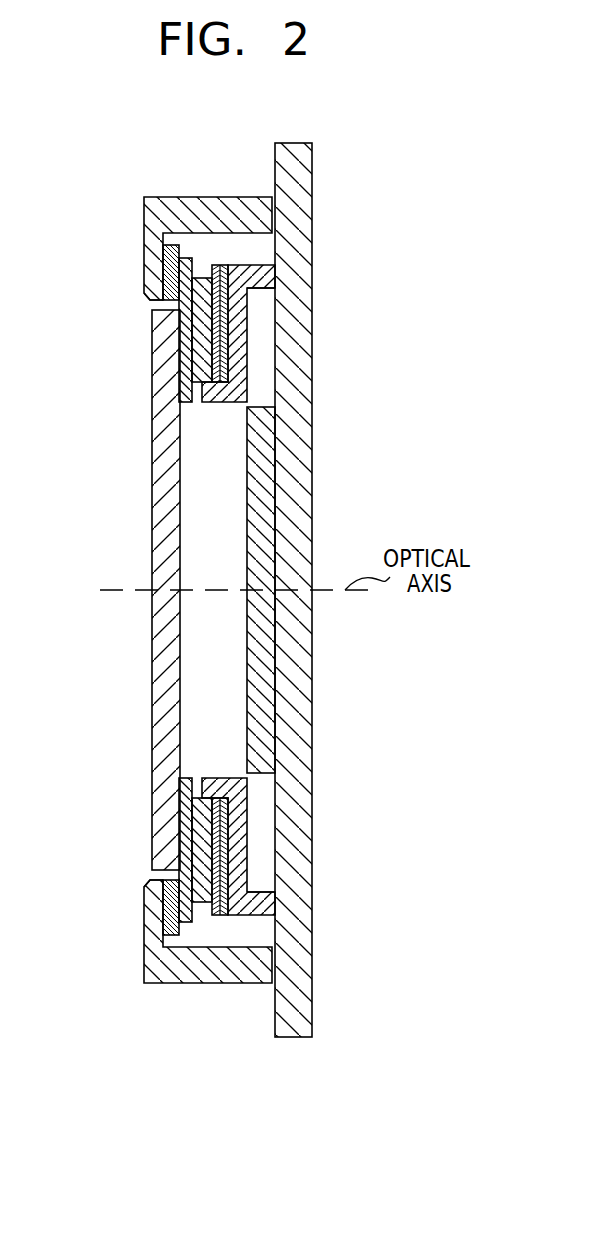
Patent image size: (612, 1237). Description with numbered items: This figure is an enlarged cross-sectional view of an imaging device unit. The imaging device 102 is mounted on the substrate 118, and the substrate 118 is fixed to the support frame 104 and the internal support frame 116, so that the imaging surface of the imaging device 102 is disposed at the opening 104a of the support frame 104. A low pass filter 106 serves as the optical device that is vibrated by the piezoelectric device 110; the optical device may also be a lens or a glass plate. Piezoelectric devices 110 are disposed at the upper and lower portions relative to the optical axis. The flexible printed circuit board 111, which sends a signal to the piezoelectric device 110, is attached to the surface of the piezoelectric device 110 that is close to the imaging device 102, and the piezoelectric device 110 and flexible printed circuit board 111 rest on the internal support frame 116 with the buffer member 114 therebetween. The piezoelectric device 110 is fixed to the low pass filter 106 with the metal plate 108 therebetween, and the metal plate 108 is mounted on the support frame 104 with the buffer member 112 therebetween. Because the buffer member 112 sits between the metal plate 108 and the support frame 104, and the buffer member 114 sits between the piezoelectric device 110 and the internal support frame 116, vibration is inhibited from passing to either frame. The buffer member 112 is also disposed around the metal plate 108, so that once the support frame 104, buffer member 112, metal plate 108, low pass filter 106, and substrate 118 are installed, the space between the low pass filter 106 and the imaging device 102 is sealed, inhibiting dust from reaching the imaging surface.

The imaging device 102 is at (262, 507).
The support frame 104 is at (160, 201).
The opening 104a is at (150, 299).
The low pass filter 106 is at (165, 461).
The metal plate 108 is at (180, 347).
The piezoelectric device 110 is at (208, 280).
The flexible printed circuit board 111 is at (213, 283).
The buffer member 112 is at (165, 276).
The buffer member 114 is at (227, 267).
The internal support frame 116 is at (274, 275).
The substrate 118 is at (299, 440).